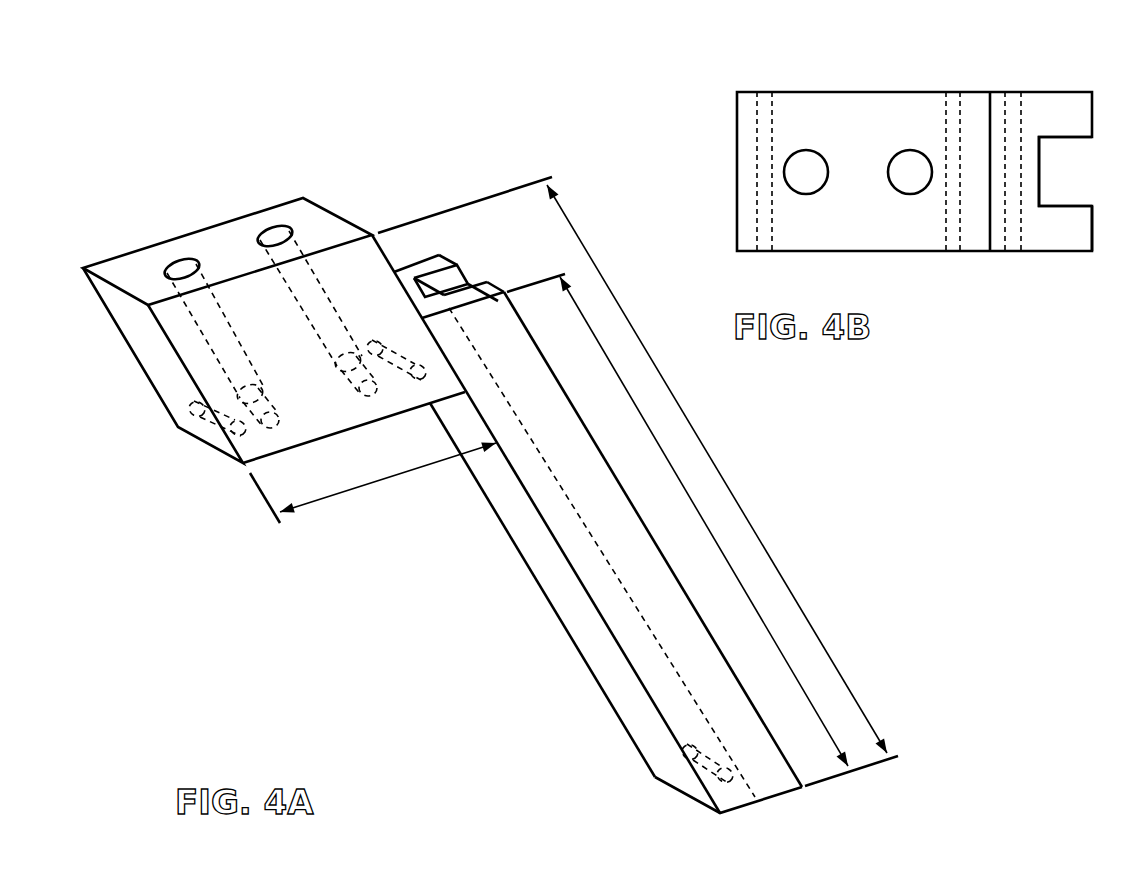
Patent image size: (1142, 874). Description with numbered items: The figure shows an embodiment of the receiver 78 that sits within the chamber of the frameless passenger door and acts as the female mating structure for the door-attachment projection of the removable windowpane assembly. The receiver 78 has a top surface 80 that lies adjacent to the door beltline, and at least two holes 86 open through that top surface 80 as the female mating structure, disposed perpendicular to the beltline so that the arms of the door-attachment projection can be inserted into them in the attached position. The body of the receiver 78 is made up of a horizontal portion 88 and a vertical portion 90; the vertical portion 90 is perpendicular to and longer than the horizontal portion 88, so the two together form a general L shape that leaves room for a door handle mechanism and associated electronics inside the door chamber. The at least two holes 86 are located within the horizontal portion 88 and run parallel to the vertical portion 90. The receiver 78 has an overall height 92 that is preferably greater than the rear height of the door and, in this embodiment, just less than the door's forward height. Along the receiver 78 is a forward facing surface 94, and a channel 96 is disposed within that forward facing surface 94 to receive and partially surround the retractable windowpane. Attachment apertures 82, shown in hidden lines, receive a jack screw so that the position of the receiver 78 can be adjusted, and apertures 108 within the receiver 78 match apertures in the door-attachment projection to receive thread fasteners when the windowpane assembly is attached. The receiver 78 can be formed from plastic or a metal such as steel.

In FIG. 4A, the receiver 78 is at (108, 223).
In FIG. 4B, the receiver 78 is at (698, 101).
In FIG. 4A, the top surface 80 is at (323, 222).
In FIG. 4B, the top surface 80 is at (883, 223).
In FIG. 4A, the attachment apertures 82 is at (229, 432).
In FIG. 4B, the attachment apertures 82 is at (766, 92).
In FIG. 4A, the at least two holes 86 is at (273, 233).
In FIG. 4B, the at least two holes 86 is at (910, 168).
In FIG. 4A, the horizontal portion 88 is at (387, 480).
In FIG. 4A, the vertical portion 90 is at (672, 472).
In FIG. 4A, the height 92 is at (776, 565).
In FIG. 4A, the forward facing surface 94 is at (682, 585).
In FIG. 4B, the forward facing surface 94 is at (1092, 240).
In FIG. 4A, the channel 96 is at (455, 290).
In FIG. 4B, the channel 96 is at (1068, 170).
In FIG. 4A, the apertures 108 is at (263, 408).